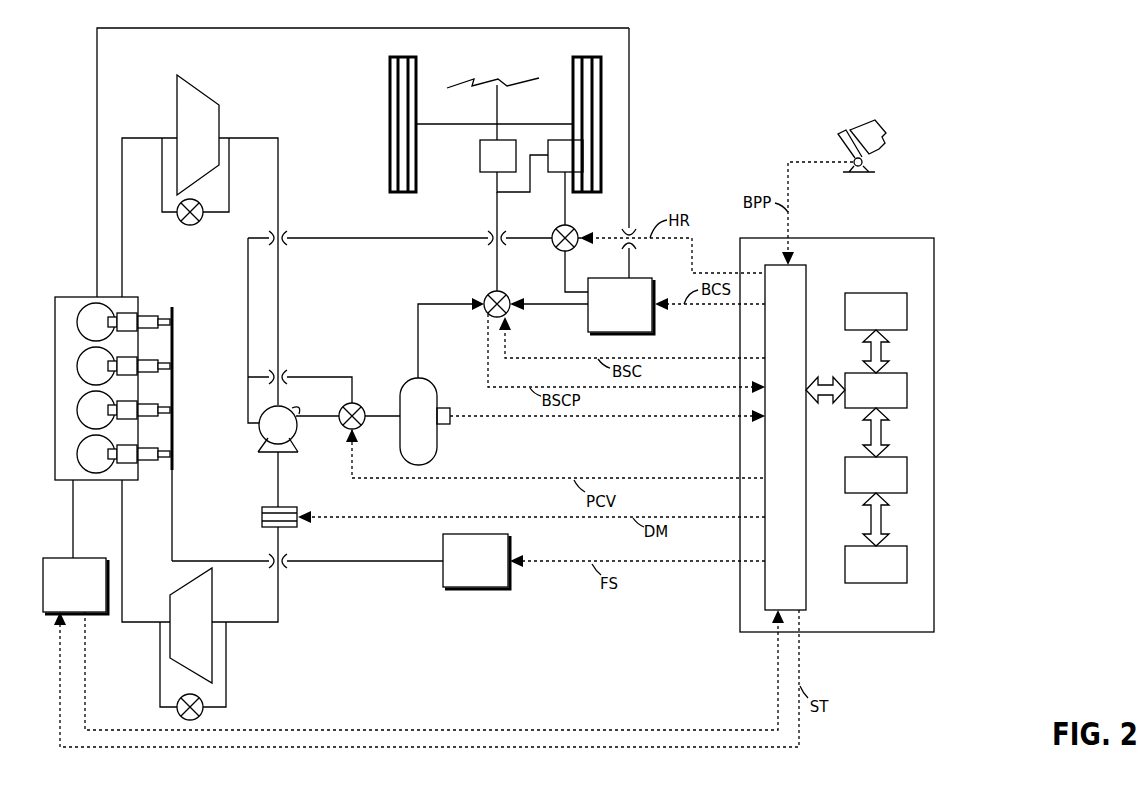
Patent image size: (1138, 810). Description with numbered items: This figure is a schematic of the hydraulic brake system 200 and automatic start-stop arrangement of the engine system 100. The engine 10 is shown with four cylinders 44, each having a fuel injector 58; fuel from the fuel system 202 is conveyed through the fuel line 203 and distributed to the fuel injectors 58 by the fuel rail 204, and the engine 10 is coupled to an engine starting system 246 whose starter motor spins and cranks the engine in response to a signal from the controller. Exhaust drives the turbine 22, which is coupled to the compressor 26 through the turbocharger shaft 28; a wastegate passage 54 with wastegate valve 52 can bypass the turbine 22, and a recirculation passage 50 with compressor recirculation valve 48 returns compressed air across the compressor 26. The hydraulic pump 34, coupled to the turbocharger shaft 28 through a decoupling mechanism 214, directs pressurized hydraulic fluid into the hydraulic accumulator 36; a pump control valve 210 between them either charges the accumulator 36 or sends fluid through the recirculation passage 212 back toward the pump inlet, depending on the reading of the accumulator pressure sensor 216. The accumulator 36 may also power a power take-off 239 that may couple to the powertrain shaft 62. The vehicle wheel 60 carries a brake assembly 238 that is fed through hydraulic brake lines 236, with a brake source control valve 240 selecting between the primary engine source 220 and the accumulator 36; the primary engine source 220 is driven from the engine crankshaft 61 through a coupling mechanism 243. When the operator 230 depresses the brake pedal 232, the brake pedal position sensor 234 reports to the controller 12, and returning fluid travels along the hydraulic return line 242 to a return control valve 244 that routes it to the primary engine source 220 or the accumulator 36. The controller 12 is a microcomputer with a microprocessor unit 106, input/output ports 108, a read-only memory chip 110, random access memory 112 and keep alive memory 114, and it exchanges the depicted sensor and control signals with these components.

The engine 10 is at (55, 437).
The controller 12 is at (920, 238).
The turbine 22 is at (182, 636).
The compressor 26 is at (189, 144).
The turbocharger shaft 28 is at (280, 300).
The hydraulic pump 34 is at (270, 432).
The hydraulic accumulator 36 is at (434, 385).
The cylinders 44 is at (88, 300).
The compressor recirculation valve 48 is at (185, 225).
The recirculation passage 50 is at (228, 222).
The wastegate valve 52 is at (192, 692).
The wastegate passage 54 is at (227, 677).
The fuel injector 58 is at (142, 458).
The vehicle wheel 60 is at (418, 78).
The engine crankshaft 61 is at (98, 93).
The powertrain shaft 62 is at (447, 125).
The engine system 100 is at (455, 652).
The microprocessor unit 106 is at (907, 388).
The input/output ports 108 is at (805, 268).
The read-only memory chip 110 is at (907, 307).
The random access memory 112 is at (907, 472).
The keep alive memory 114 is at (907, 560).
The brake system 200 is at (1052, 83).
The fuel system 202 is at (462, 568).
The fuel line 203 is at (360, 563).
The fuel rail 204 is at (174, 333).
The pump control valve 210 is at (363, 405).
The recirculation passage 212 is at (308, 375).
The decoupling mechanism 214 is at (284, 506).
The accumulator pressure sensor 216 is at (448, 422).
The primary engine source 220 is at (607, 313).
The operator 230 is at (882, 135).
The brake pedal 232 is at (838, 134).
The brake pedal position sensor 234 is at (868, 163).
The hydraulic brake lines 236 is at (503, 260).
The brake assembly 238 is at (554, 165).
The power take-off 239 is at (487, 165).
The brake source control valve 240 is at (488, 292).
The hydraulic return line 242 is at (374, 240).
The coupling mechanism 243 is at (630, 67).
The return control valve 244 is at (557, 228).
The engine starting system 246 is at (62, 594).